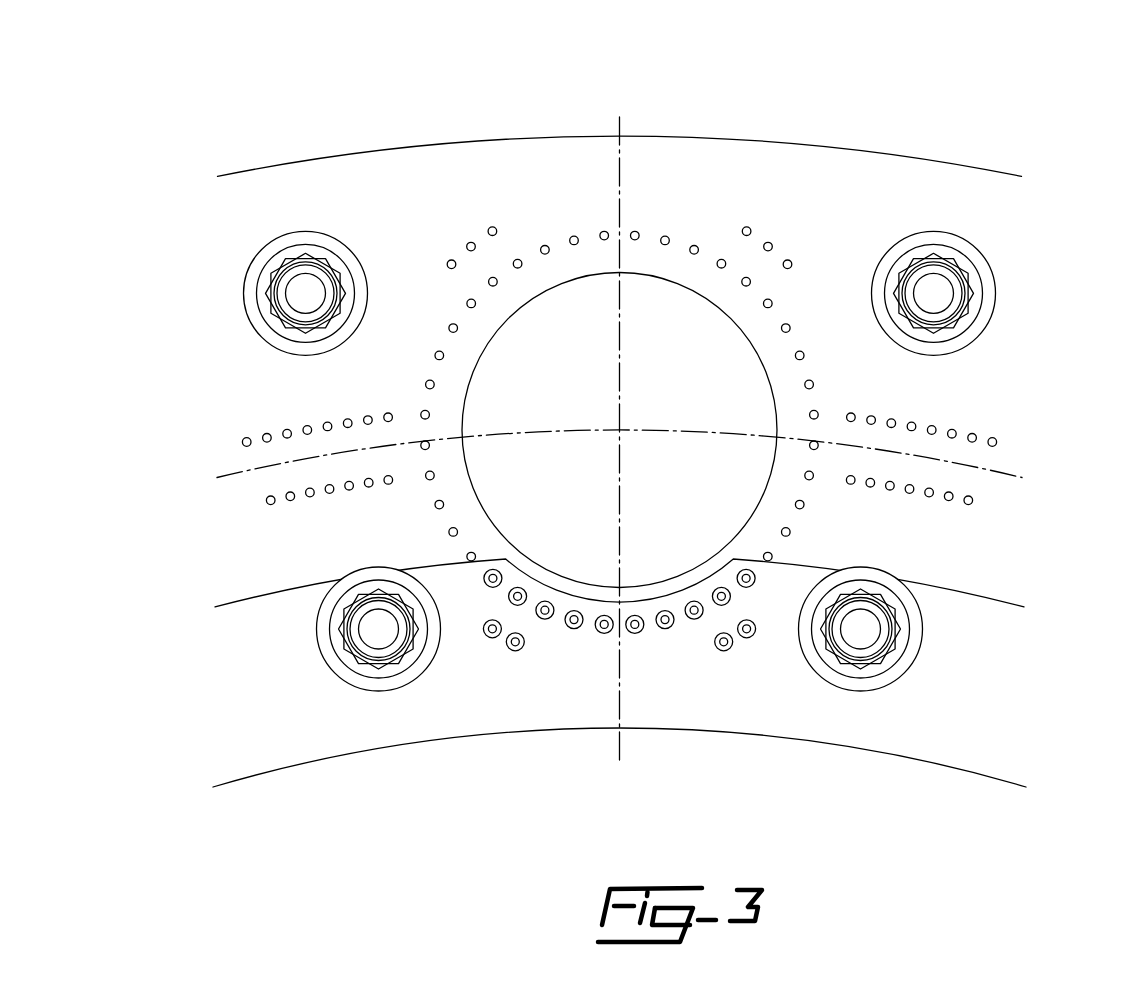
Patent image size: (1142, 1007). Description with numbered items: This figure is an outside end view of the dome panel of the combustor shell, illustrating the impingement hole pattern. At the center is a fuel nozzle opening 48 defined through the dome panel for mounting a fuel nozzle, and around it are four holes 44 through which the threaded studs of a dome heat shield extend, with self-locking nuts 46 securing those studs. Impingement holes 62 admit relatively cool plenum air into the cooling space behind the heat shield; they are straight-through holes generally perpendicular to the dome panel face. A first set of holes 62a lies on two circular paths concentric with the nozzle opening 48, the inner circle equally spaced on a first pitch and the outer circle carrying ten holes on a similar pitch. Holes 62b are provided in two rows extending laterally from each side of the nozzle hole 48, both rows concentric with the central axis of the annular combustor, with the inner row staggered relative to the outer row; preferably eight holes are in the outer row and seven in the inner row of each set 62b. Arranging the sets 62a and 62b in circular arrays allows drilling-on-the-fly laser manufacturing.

The holes 44 is at (273, 270).
The self-locking nuts 46 is at (283, 244).
The fuel nozzle opening 48 is at (664, 417).
The impingement holes 62 is at (275, 417).
The first set of holes 62a is at (747, 225).
The holes (second set) 62b is at (263, 500).